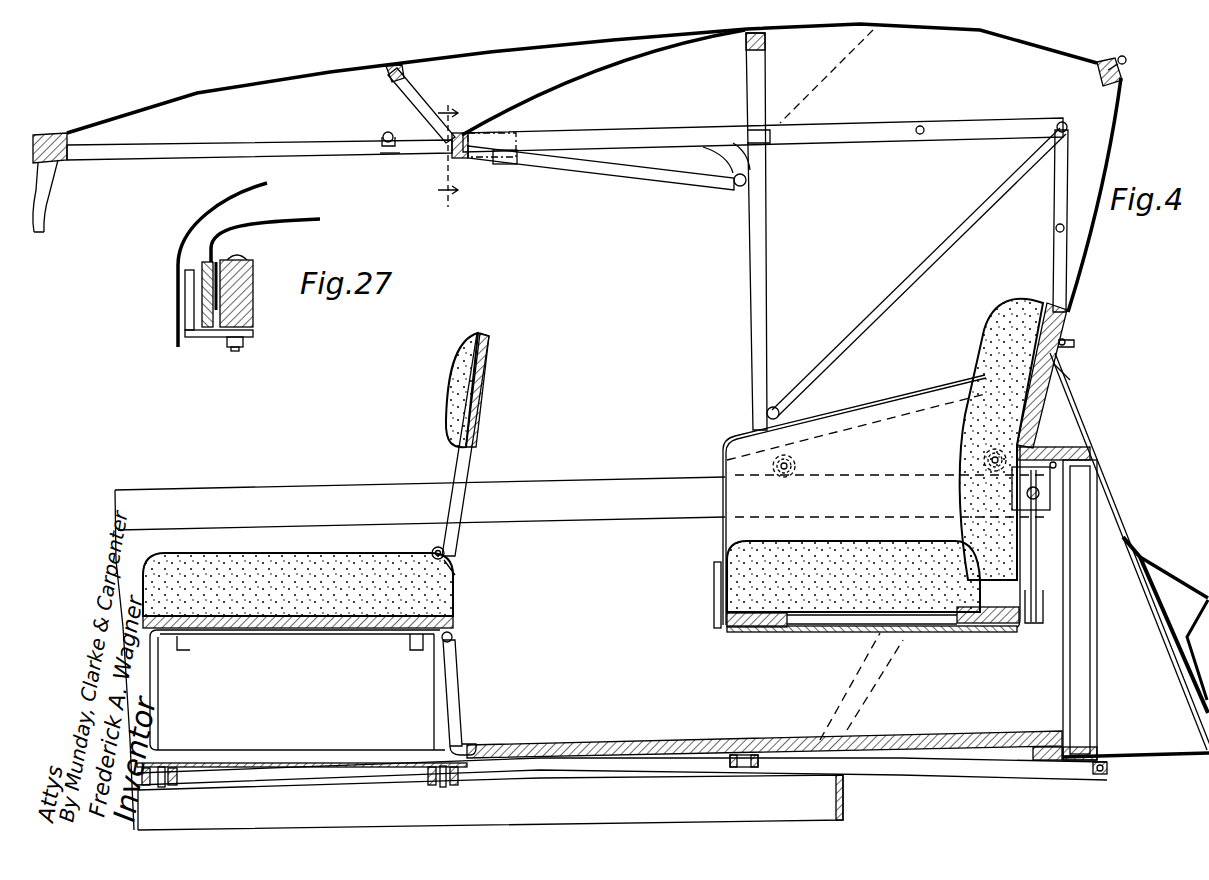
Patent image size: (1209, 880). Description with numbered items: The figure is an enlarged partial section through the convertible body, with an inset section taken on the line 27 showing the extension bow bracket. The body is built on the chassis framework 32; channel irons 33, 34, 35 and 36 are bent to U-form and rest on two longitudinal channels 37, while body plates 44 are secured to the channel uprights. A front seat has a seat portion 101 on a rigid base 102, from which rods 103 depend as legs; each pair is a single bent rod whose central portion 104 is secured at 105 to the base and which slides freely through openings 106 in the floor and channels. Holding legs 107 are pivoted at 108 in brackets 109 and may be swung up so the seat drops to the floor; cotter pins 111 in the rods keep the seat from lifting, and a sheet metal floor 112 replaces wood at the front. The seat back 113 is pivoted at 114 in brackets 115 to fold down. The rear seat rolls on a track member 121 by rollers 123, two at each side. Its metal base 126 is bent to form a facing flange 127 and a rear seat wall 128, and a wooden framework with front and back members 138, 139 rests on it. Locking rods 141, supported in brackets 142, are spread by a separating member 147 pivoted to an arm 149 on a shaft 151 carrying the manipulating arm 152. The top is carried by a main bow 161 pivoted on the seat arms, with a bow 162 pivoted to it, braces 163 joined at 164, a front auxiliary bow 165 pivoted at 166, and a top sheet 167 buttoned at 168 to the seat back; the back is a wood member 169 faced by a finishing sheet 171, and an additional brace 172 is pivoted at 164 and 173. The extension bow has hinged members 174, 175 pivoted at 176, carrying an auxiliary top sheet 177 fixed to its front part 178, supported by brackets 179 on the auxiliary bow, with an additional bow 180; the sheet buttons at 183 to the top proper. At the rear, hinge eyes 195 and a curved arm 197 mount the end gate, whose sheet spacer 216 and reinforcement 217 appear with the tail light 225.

In FIG. 4, the section line 27 is at (452, 152).
In FIG. 4, the framework 32 is at (848, 800).
In FIG. 4, the channel iron 33 is at (1046, 760).
In FIG. 4, the channel iron 34 is at (742, 752).
In FIG. 4, the channel iron 35 is at (482, 745).
In FIG. 4, the channel iron 36 is at (172, 764).
In FIG. 4, the longitudinal channel 37 is at (941, 772).
In FIG. 4, the body plate 44 is at (657, 544).
In FIG. 4, the seat portion 101 is at (328, 567).
In FIG. 4, the rigid base 102 is at (457, 605).
In FIG. 4, the rods 103 is at (440, 682).
In FIG. 4, the central portion 104 is at (326, 636).
In FIG. 4, the securing point 105 is at (416, 641).
In FIG. 4, the openings 106 is at (183, 645).
In FIG. 4, the holding legs 107 is at (458, 706).
In FIG. 4, the pivot 108 is at (455, 637).
In FIG. 4, the brackets 109 is at (470, 622).
In FIG. 4, the cotter pins 111 is at (452, 772).
In FIG. 4, the sheet metal floor 112 is at (348, 769).
In FIG. 4, the back 113 is at (470, 393).
In FIG. 4, the pivot 114 is at (450, 548).
In FIG. 4, the brackets 115 is at (457, 568).
In FIG. 4, the track member 121 is at (640, 484).
In FIG. 4, the rollers 123 is at (792, 458).
In FIG. 4, the metal base 126 is at (781, 632).
In FIG. 4, the facing flange 127 is at (724, 630).
In FIG. 4, the rear seat wall 128 is at (1012, 525).
In FIG. 4, the front member 138 is at (732, 632).
In FIG. 4, the back member 139 is at (985, 628).
In FIG. 4, the rods 141 is at (1057, 472).
In FIG. 4, the brackets 142 is at (1040, 493).
In FIG. 4, the separating member 147 is at (1036, 537).
In FIG. 4, the arm 149 is at (1122, 616).
In FIG. 4, the shaft 151 is at (1035, 628).
In FIG. 4, the manipulating arm 152 is at (714, 603).
In FIG. 4, the main bow 161 is at (755, 371).
In FIG. 4, the bow 162 is at (900, 283).
In FIG. 4, the braces 163 is at (1068, 200).
In FIG. 4, the connection point 164 is at (1073, 131).
In FIG. 4, the front auxiliary bow 165 is at (598, 166).
In FIG. 27, the front auxiliary bow 165 is at (255, 316).
In FIG. 4, the pivot 166 is at (737, 188).
In FIG. 4, the top sheet 167 is at (612, 68).
In FIG. 4, the button engagement 168 is at (1074, 344).
In FIG. 4, the wood member 169 is at (1032, 420).
In FIG. 4, the finishing sheet 171 is at (1068, 316).
In FIG. 4, the additional brace 172 is at (946, 134).
In FIG. 4, the pivot 173 is at (806, 123).
In FIG. 4, the hinged member 174 is at (393, 156).
In FIG. 27, the hinged member 174 is at (193, 268).
In FIG. 4, the hinged member 175 is at (160, 160).
In FIG. 4, the pivot 176 is at (385, 130).
In FIG. 4, the auxiliary top sheet 177 is at (210, 98).
In FIG. 4, the front part 178 is at (72, 155).
In FIG. 4, the braces or brackets 179 is at (520, 134).
In FIG. 27, the braces or brackets 179 is at (228, 340).
In FIG. 4, the additional bow 180 is at (403, 92).
In FIG. 4, the button 183 is at (1126, 60).
In FIG. 4, the hinge eyes 195 is at (1110, 768).
In FIG. 4, the curved arm 197 is at (888, 684).
In FIG. 4, the sheet spacer 216 is at (1176, 758).
In FIG. 4, the reinforcement 217 is at (1164, 653).
In FIG. 4, the tail light 225 is at (1160, 580).